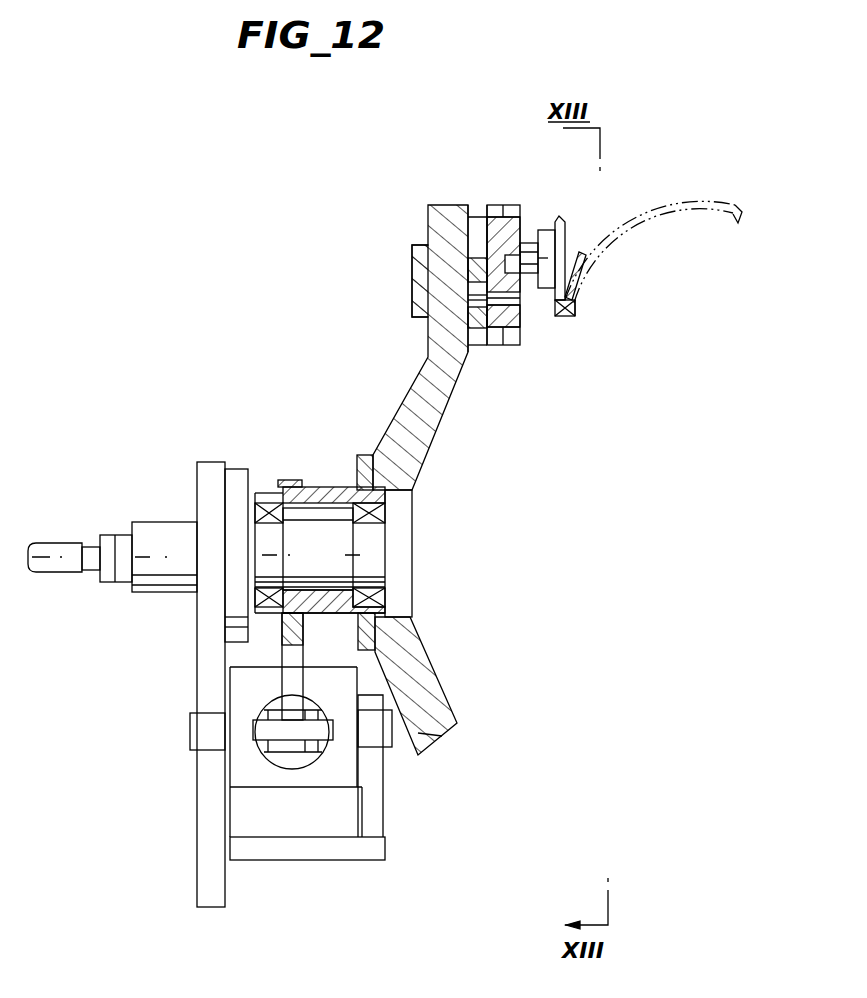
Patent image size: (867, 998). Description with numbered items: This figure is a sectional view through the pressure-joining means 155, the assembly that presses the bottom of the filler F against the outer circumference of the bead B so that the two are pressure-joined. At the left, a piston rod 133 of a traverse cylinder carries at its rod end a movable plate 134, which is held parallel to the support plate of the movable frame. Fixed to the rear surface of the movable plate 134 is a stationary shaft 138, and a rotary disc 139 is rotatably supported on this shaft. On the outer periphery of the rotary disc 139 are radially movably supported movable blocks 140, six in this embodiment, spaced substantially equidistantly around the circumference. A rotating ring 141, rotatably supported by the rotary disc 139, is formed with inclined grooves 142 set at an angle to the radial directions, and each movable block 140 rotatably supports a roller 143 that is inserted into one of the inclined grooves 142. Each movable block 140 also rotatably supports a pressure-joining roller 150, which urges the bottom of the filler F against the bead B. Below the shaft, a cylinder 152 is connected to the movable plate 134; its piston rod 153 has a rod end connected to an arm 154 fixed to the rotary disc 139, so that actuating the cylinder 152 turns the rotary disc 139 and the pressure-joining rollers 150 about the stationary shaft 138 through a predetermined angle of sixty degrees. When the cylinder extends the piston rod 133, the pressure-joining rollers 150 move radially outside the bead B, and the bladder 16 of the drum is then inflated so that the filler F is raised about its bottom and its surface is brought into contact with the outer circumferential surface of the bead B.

The bladder 16 is at (686, 203).
The piston rod 133 is at (63, 547).
The movable plate 134 is at (213, 877).
The stationary shaft 138 is at (365, 553).
The rotary disc 139 is at (428, 442).
The movable block 140 is at (519, 216).
The rotating ring 141 is at (492, 345).
The inclined groove 142 is at (478, 298).
The roller 143 is at (472, 312).
The pressure-joining roller 150 is at (557, 230).
The cylinder 152 is at (328, 777).
The piston rod 153 is at (272, 752).
The arm 154 is at (296, 662).
The pressure-joining means 155 is at (282, 410).
The filler F is at (578, 298).
The bead B is at (563, 318).